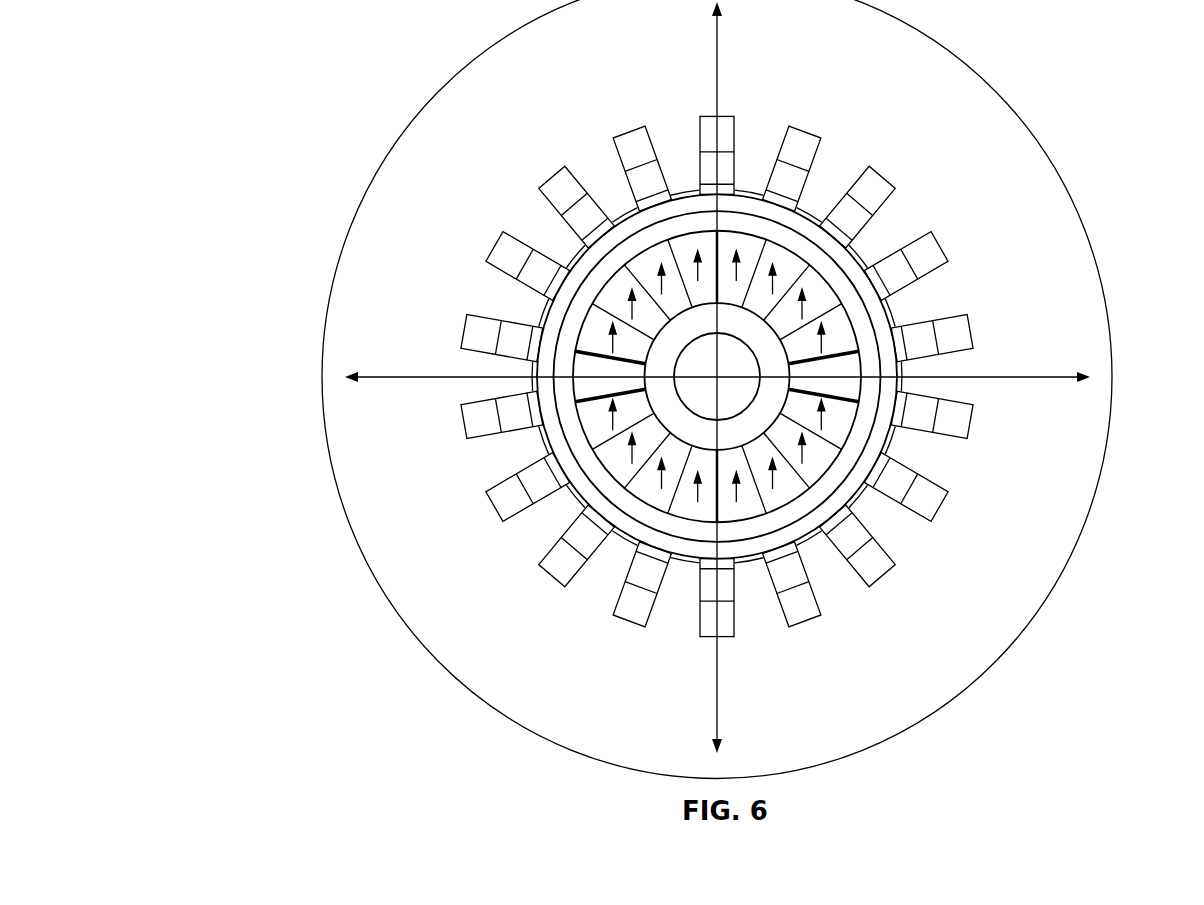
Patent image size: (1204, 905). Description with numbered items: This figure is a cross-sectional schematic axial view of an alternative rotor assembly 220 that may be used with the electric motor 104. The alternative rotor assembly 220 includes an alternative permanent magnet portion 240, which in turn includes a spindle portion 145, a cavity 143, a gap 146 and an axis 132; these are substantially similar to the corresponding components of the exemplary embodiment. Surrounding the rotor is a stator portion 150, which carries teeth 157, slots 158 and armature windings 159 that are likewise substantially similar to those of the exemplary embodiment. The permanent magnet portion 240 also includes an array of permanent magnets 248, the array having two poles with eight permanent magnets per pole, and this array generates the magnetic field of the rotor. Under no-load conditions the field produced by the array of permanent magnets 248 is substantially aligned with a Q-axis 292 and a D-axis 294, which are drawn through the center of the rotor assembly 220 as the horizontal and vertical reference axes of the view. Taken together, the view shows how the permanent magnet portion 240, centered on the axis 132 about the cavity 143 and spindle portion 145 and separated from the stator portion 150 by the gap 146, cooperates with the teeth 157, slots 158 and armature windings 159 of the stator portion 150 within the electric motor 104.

The electric motor 104 is at (238, 70).
The alternative rotor assembly 220 is at (251, 135).
The alternative permanent magnet portion 240 is at (266, 306).
The stator portion 150 is at (1090, 110).
The axis 132 is at (588, 468).
The cavity 143 is at (708, 350).
The spindle portion 145 is at (647, 361).
The gap 146 is at (573, 419).
The array of permanent magnets 248 is at (573, 497).
The teeth 157 is at (878, 229).
The slots 158 is at (933, 248).
The armature windings 159 is at (932, 255).
The Q-axis 292 is at (398, 380).
The D-axis 294 is at (718, 33).